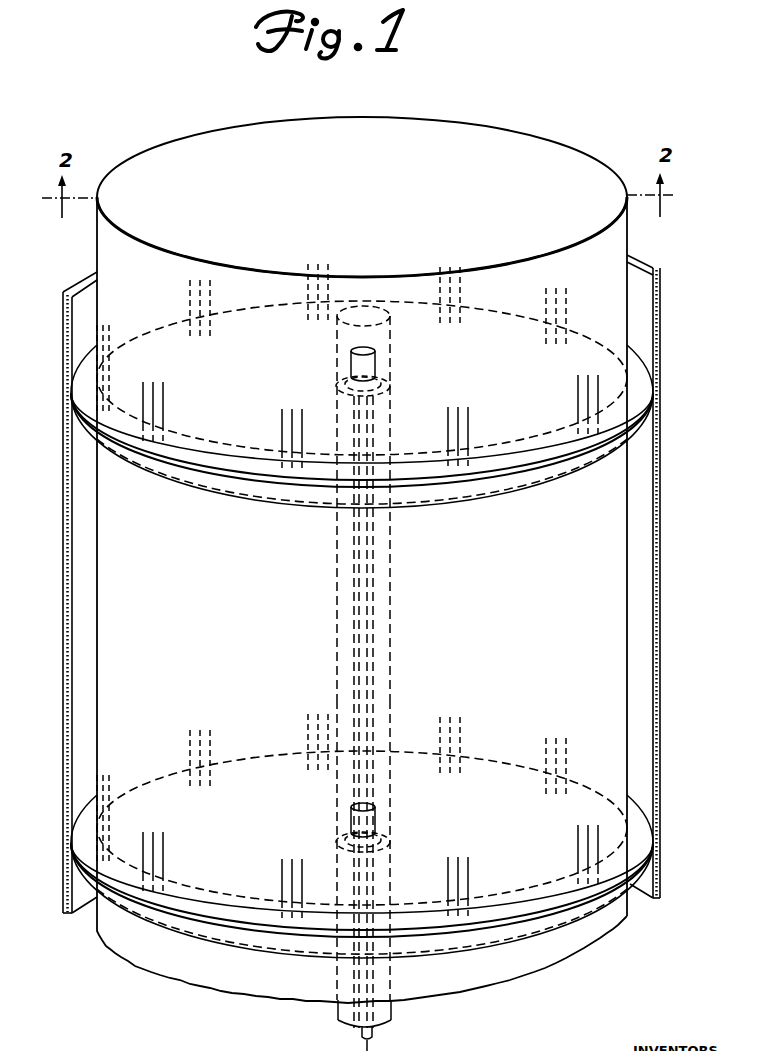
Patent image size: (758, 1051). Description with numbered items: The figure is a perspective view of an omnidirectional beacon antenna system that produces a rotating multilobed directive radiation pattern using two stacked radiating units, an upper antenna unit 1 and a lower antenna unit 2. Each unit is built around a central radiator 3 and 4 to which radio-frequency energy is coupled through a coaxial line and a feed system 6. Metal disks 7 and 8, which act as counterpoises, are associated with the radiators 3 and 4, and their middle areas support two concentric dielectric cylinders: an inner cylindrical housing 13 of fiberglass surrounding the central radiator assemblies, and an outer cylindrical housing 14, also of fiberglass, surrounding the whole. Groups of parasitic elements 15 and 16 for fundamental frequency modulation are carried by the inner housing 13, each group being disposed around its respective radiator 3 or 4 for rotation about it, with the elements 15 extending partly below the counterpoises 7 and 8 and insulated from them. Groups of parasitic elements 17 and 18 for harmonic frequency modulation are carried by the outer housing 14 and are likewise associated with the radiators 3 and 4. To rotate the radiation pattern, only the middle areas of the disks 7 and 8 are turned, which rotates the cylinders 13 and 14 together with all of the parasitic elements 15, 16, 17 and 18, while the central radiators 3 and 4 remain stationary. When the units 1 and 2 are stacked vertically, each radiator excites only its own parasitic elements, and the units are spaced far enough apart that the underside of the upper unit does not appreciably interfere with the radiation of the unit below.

The upper antenna unit 1 is at (643, 319).
The lower antenna unit 2 is at (668, 788).
The central radiator 3 is at (351, 362).
The central radiator 4 is at (352, 815).
The feed system 6 is at (383, 555).
The metal disk 7 is at (524, 396).
The metal disk 8 is at (529, 839).
The inner cylindrical housing 13 is at (393, 595).
The outer cylindrical housing 14 is at (628, 558).
The parasitic elements 15 is at (380, 360).
The parasitic elements 16 is at (393, 808).
The parasitic elements 17 is at (283, 432).
The parasitic elements 18 is at (213, 745).